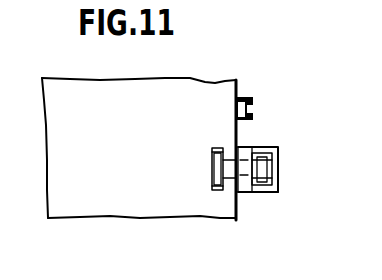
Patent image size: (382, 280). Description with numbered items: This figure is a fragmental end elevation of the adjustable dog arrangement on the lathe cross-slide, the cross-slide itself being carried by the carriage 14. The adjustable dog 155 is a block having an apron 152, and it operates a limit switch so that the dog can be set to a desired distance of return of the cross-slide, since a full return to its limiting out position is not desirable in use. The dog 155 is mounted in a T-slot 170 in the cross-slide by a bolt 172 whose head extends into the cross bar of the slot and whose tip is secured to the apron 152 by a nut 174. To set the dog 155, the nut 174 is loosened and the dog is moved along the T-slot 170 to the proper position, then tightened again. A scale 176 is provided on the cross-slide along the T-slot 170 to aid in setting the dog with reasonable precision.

The carriage 14 is at (113, 159).
The apron 152 is at (242, 148).
The adjustable dog 155 is at (260, 192).
The T-slot 170 is at (212, 150).
The bolt 172 is at (213, 165).
The nut 174 is at (263, 154).
The scale 176 is at (241, 100).